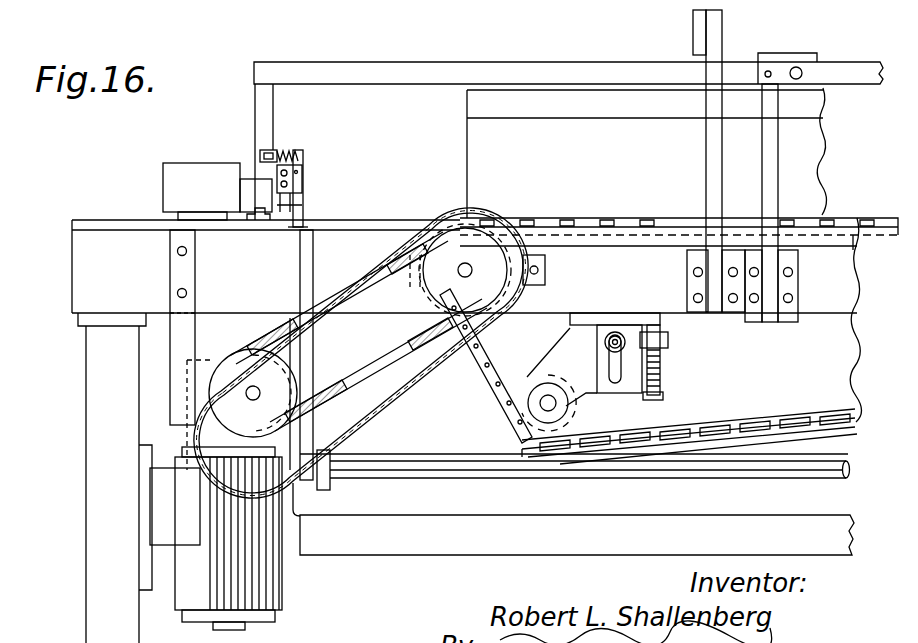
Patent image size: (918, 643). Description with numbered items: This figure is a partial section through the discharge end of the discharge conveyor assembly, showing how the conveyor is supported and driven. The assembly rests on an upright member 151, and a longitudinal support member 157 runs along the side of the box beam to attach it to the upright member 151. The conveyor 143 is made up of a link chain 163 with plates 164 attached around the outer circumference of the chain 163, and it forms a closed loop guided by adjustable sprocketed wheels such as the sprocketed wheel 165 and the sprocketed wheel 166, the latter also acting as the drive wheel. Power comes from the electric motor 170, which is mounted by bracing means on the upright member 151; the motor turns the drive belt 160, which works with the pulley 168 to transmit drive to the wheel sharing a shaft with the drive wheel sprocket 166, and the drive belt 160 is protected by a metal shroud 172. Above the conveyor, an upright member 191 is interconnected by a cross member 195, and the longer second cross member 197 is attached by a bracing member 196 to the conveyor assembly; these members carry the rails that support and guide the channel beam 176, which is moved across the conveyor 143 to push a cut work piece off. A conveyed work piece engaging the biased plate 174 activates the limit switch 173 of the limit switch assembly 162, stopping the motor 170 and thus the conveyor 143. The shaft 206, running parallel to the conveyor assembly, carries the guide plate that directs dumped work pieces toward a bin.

The second cross member 197 is at (455, 50).
The cross member 195 is at (833, 67).
The upright member 191 is at (770, 173).
The channel beam 176 is at (477, 138).
The bracing member 196 is at (268, 118).
The limit switch 173 is at (294, 150).
The biased plate 174 is at (302, 210).
The limit switch assembly 162 is at (212, 163).
The longitudinal support member 157 is at (82, 263).
The upright member 151 is at (100, 405).
The sprocketed drive wheel 166 is at (472, 262).
The drive belt 160 is at (370, 270).
The metal shroud 172 is at (393, 399).
The pulley 168 is at (272, 384).
The sprocketed wheel 165 is at (547, 382).
The conveyor 143 is at (703, 418).
The link chain 163 is at (777, 412).
The plate 164 is at (727, 435).
The shaft 206 is at (414, 476).
The electric motor 170 is at (272, 592).